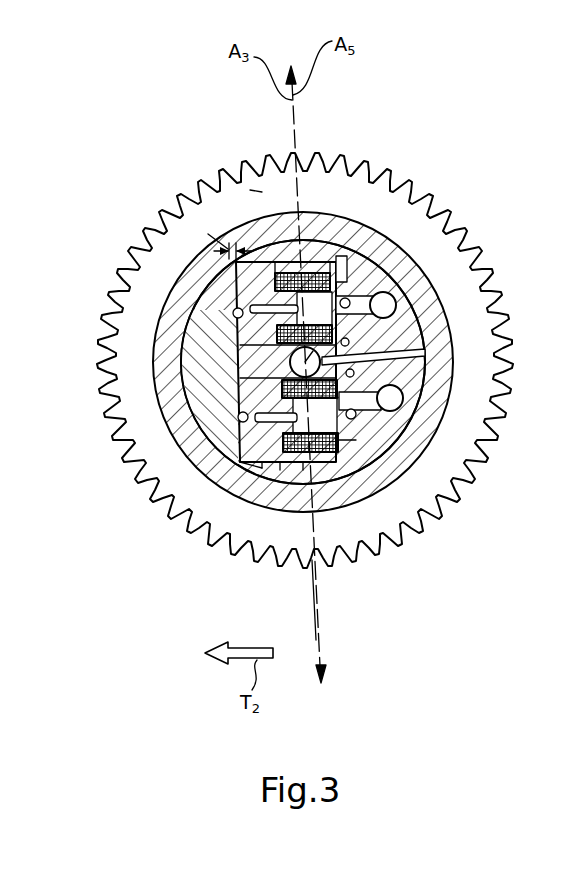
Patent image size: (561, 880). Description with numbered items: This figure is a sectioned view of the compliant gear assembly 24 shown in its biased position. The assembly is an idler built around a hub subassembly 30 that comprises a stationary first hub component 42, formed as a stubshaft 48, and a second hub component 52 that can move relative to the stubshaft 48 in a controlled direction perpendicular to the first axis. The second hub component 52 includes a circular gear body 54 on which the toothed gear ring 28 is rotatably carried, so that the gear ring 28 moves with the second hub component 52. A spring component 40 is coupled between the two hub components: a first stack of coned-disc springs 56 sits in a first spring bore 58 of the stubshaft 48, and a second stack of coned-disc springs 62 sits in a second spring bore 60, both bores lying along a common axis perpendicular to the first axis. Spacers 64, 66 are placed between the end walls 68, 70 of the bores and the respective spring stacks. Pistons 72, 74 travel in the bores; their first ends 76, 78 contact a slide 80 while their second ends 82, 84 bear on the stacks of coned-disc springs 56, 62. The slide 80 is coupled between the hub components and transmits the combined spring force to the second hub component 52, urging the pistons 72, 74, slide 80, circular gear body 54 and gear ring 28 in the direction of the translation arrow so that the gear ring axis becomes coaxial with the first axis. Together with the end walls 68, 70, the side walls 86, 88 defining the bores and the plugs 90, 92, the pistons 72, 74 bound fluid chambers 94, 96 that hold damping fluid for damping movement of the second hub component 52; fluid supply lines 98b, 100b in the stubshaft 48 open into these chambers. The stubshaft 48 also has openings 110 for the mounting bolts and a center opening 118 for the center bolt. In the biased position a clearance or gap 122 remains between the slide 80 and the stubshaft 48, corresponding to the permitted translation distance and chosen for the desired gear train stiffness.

The compliant gear assembly 24 is at (298, 120).
The gear ring 28 is at (365, 240).
The hub subassembly 30 is at (241, 240).
The spring component 40 is at (303, 476).
The first hub component 42 is at (382, 292).
The stubshaft 48 is at (425, 268).
The second hub component 52 is at (213, 215).
The circular gear body 54 is at (318, 265).
The first stack of coned-disc springs 56 is at (312, 268).
The first spring bore 58 is at (210, 228).
The second spring bore 60 is at (262, 468).
The second stack of coned-disc springs 62 is at (318, 585).
The spacer 64 is at (341, 258).
The spacer 66 is at (326, 460).
The end wall 68 is at (310, 262).
The end wall 70 is at (322, 455).
The piston 72 is at (262, 283).
The piston 74 is at (216, 446).
The first end 76 is at (223, 297).
The first end 78 is at (265, 457).
The slide 80 is at (224, 406).
The second end 82 is at (299, 262).
The second end 84 is at (279, 472).
The side wall 86 is at (228, 268).
The side wall 88 is at (250, 463).
The plug 90 is at (405, 255).
The plug 92 is at (356, 448).
The fluid chamber 94 is at (262, 350).
The fluid chamber 96 is at (252, 443).
The fluid supply line 98b is at (372, 290).
The fluid supply line 100b is at (340, 462).
The openings 110 is at (396, 304).
The center opening 118 is at (426, 352).
The clearance or gap 122 is at (257, 189).